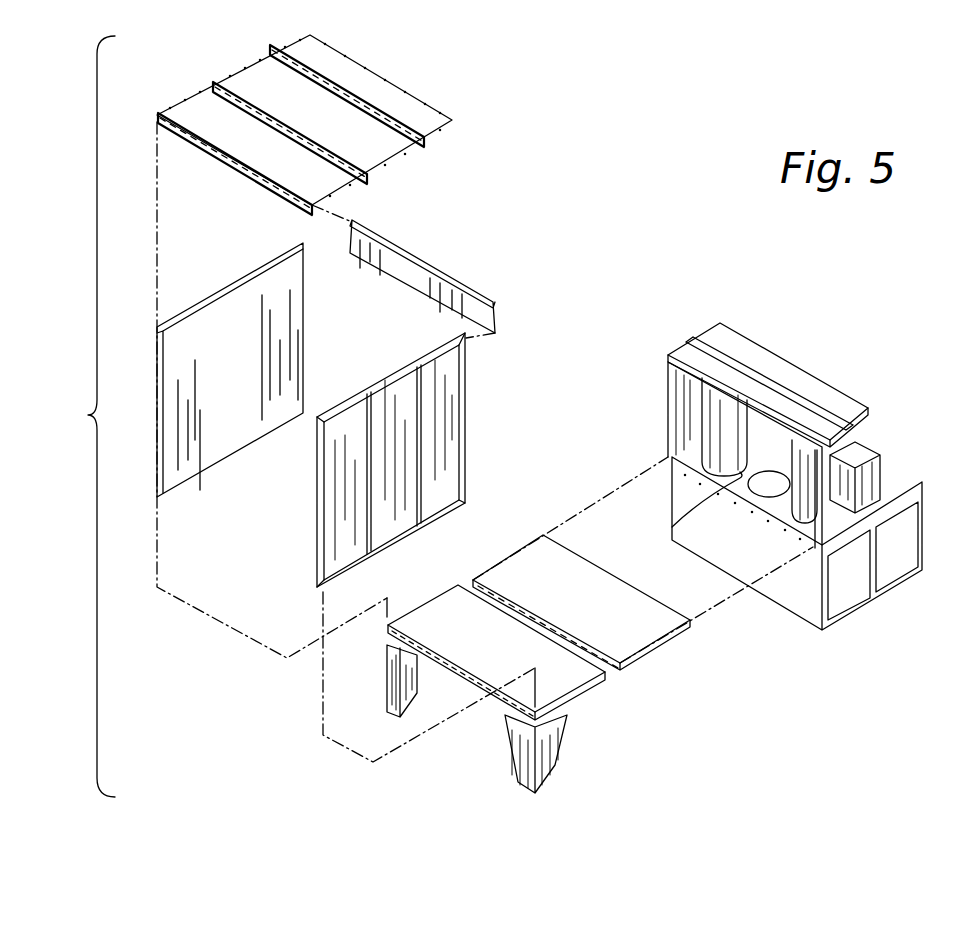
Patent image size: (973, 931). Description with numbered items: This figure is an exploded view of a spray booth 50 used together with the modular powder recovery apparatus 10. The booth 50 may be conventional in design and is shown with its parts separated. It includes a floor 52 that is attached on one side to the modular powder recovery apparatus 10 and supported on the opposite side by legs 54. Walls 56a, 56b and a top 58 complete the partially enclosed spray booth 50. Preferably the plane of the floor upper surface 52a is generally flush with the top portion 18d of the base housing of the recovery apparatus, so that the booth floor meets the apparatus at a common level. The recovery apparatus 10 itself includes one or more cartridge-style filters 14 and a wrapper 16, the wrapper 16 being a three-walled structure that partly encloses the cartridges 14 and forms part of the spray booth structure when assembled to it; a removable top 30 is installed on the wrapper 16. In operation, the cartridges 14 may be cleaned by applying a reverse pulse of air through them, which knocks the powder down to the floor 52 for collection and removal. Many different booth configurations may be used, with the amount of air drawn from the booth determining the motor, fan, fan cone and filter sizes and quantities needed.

The modular powder recovery apparatus 10 is at (779, 460).
The cartridge-style filters 14 is at (716, 410).
The wrapper 16 is at (668, 387).
The top portion of the base housing 18d is at (672, 525).
The removable top 30 is at (788, 376).
The spray booth 50 is at (84, 416).
The floor 52 is at (614, 650).
The floor upper surface 52a is at (520, 572).
The legs 54 is at (392, 692).
The wall 56a is at (202, 455).
The wall 56b is at (320, 520).
The top 58 is at (262, 178).